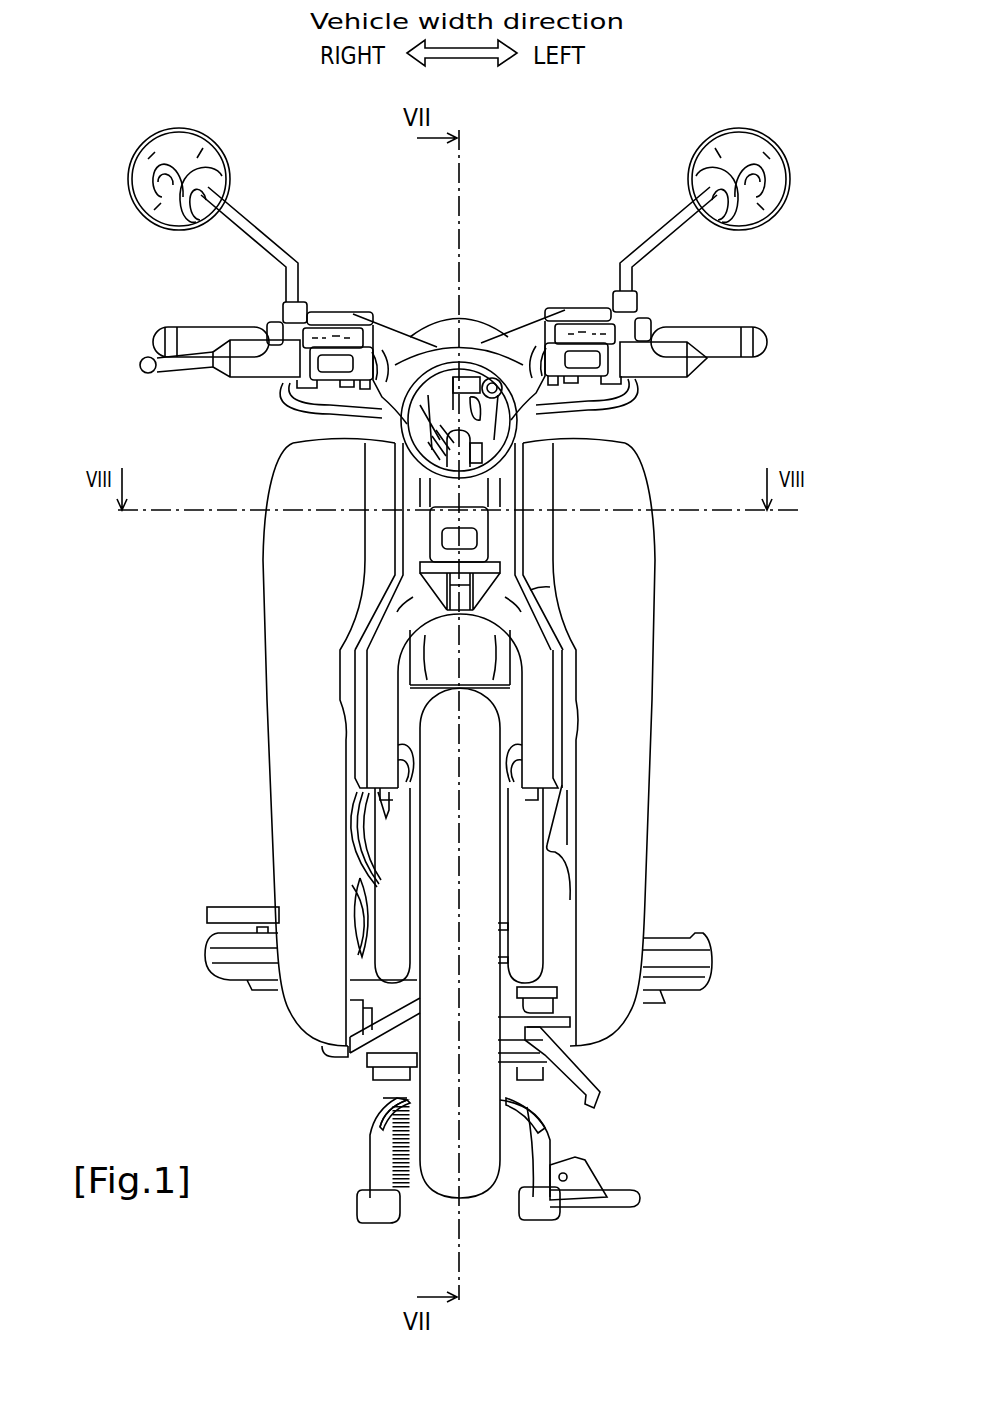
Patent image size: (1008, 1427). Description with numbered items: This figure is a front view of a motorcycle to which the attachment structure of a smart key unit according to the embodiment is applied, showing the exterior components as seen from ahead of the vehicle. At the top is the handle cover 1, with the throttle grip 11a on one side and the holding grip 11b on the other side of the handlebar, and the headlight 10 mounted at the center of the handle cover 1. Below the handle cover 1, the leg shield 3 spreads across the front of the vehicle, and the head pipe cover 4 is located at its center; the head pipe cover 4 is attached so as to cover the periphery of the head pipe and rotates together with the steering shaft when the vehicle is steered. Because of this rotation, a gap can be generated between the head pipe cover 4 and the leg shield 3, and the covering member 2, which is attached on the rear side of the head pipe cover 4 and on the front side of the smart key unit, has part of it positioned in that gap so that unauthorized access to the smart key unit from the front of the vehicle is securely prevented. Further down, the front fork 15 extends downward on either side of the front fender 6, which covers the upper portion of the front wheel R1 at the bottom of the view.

The handle cover 1 is at (514, 330).
The covering member 2 is at (520, 537).
The leg shield 3 is at (280, 756).
The head pipe cover 4 is at (360, 680).
The front fender 6 is at (502, 658).
The headlight 10 is at (514, 427).
The throttle grip 11a is at (152, 345).
The holding grip 11b is at (770, 340).
The front fork 15 is at (545, 883).
The front wheel R1 is at (488, 1130).